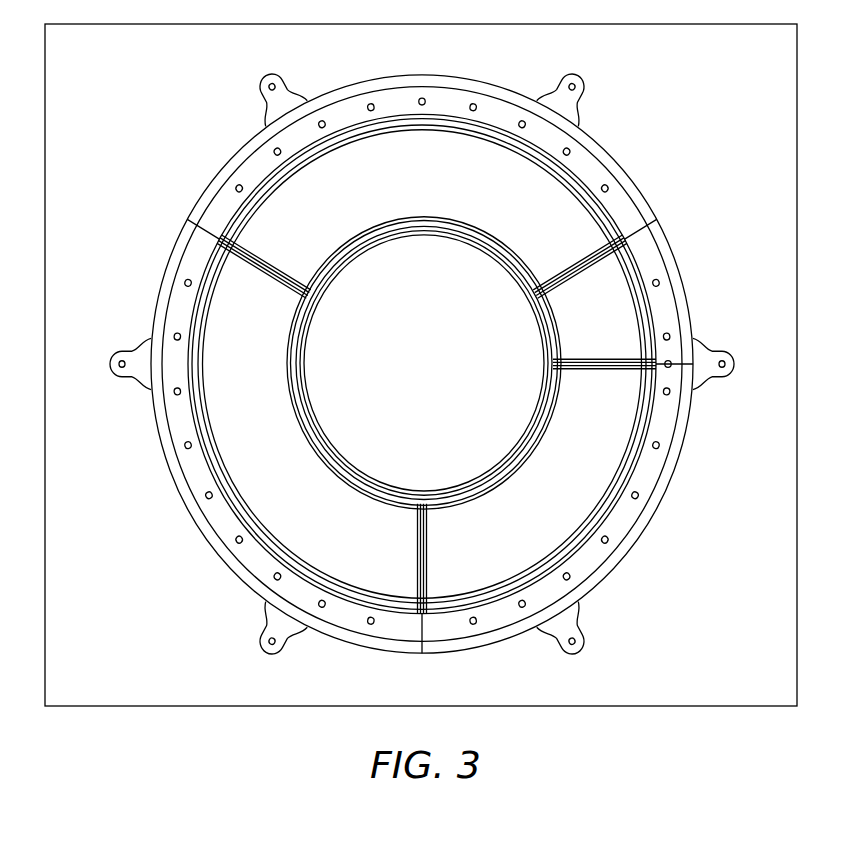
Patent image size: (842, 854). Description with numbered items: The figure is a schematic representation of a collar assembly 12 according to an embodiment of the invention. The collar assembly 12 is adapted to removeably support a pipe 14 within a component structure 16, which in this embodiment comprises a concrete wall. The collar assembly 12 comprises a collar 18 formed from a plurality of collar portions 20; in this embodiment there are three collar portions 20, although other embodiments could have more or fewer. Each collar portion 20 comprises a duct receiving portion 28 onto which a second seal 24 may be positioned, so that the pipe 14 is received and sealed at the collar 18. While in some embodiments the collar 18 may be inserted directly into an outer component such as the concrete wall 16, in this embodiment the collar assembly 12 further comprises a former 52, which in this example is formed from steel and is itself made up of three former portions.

The collar assembly 12 is at (600, 575).
The pipe 14 is at (290, 358).
The component structure 16 is at (134, 107).
The collar 18 is at (232, 405).
The collar portion 20 is at (363, 548).
The second seal 24 is at (543, 406).
The duct receiving portion 28 is at (506, 478).
The former 52 is at (240, 574).